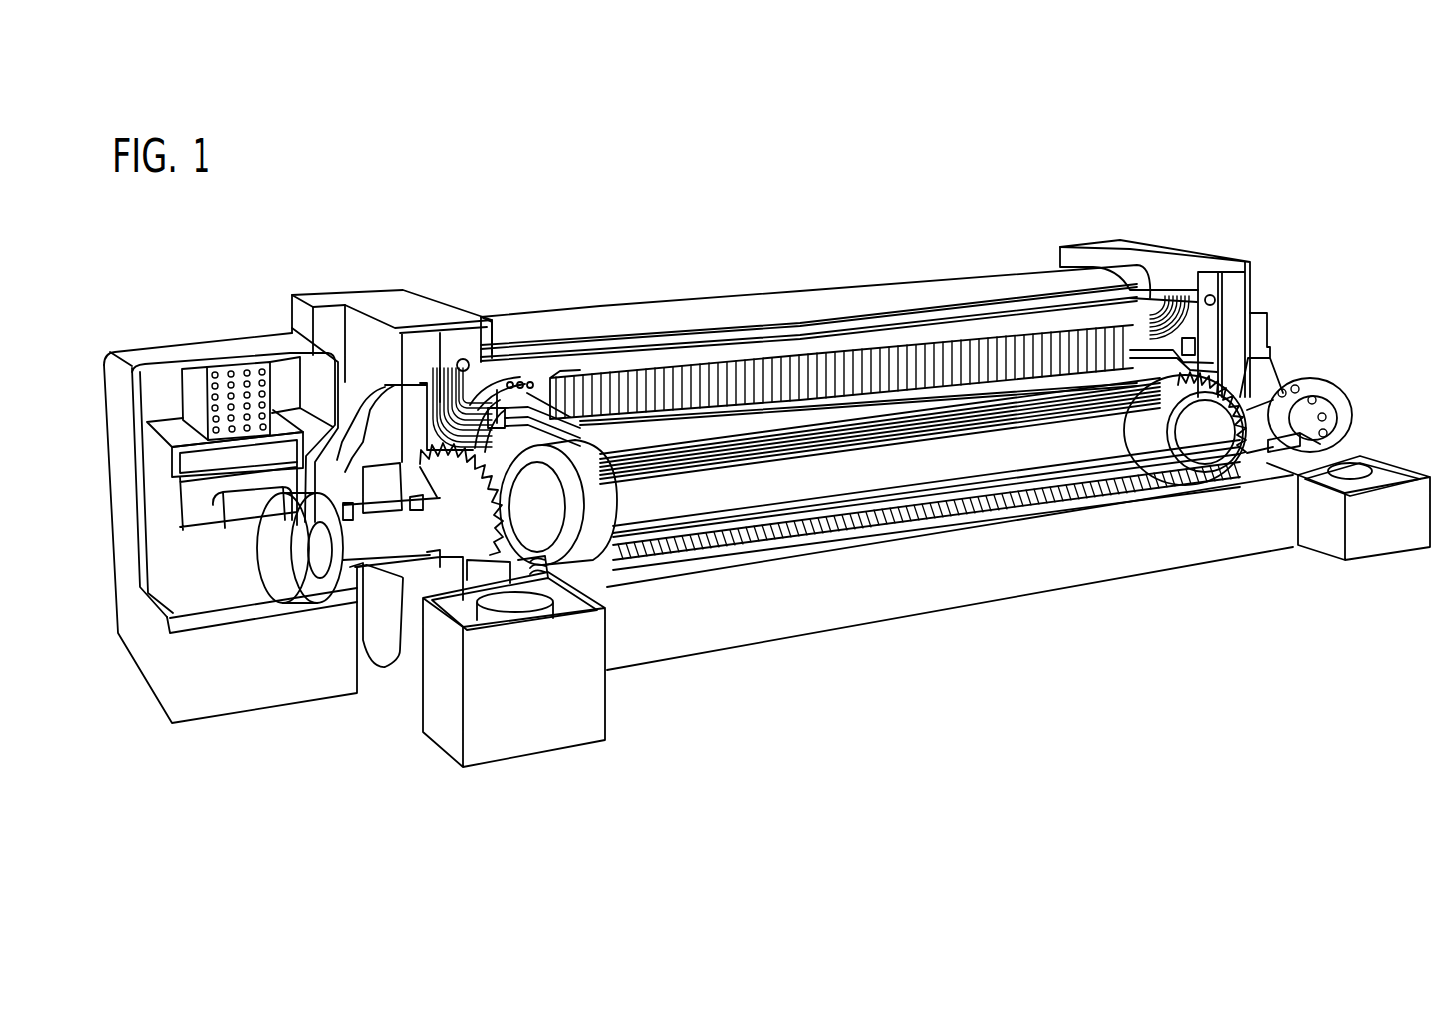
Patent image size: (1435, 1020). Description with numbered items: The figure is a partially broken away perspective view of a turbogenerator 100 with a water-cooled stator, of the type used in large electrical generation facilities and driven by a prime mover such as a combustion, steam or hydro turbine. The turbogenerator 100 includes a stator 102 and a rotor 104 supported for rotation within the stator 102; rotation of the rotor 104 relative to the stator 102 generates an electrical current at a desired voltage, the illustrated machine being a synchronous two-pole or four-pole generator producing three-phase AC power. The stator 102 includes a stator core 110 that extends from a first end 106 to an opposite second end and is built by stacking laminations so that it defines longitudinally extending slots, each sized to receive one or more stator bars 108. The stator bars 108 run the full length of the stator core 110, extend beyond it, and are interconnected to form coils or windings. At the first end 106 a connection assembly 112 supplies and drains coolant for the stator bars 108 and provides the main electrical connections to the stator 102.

The turbogenerator 100 is at (1141, 141).
The stator 102 is at (708, 332).
The rotor 104 is at (587, 517).
The first end 106 is at (429, 273).
The stator bars 108 is at (800, 405).
The stator core 110 is at (888, 372).
The connection assembly 112 is at (478, 383).